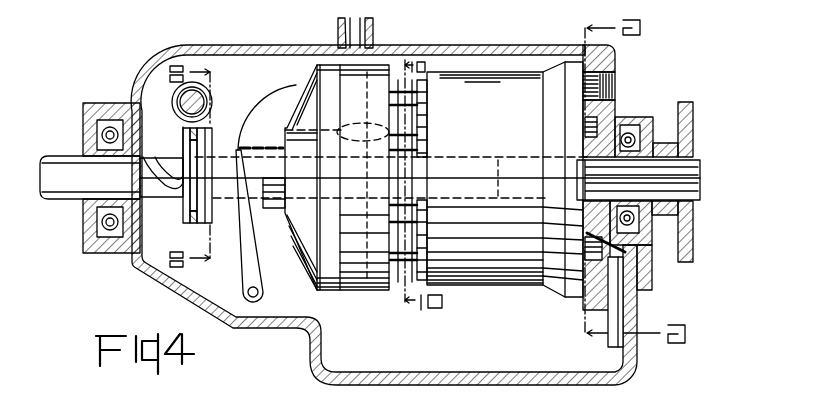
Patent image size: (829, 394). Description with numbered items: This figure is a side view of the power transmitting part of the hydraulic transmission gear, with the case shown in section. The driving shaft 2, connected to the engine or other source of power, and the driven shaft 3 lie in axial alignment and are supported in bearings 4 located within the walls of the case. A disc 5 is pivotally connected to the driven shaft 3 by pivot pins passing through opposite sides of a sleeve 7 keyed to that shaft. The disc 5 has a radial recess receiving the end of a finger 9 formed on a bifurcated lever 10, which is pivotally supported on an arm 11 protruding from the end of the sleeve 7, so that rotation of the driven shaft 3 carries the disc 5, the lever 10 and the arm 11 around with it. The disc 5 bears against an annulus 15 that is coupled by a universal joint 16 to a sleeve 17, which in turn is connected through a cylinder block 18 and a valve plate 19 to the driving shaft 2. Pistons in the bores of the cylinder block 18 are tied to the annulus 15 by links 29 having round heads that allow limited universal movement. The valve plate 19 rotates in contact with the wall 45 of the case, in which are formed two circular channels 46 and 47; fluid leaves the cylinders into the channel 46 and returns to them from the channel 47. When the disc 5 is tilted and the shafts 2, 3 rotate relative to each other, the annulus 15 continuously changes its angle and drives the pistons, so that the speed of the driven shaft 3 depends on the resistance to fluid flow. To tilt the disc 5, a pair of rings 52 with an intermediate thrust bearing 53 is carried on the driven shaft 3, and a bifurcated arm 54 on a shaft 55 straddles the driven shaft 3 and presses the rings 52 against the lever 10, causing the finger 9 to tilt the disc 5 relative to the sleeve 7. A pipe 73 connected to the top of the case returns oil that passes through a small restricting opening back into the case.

The driving shaft 2 is at (680, 170).
The driven shaft 3 is at (48, 171).
The bearings 4 is at (100, 134).
The disc 5 is at (304, 256).
The sleeve 7 is at (264, 147).
The finger 9 is at (258, 103).
The bifurcated lever 10 is at (231, 247).
The arm 11 is at (258, 248).
The annulus 15 is at (358, 282).
The universal joint 16 is at (363, 124).
The sleeve 17 is at (409, 170).
The cylinder block 18 is at (483, 280).
The valve plate 19 is at (557, 292).
The links 29 is at (419, 131).
The wall 45 is at (610, 57).
The circular channel 46 is at (612, 82).
The circular channel 47 is at (598, 126).
The rings 52 is at (208, 129).
The thrust bearing 53 is at (194, 193).
The bifurcated arm 54 is at (158, 150).
The shaft 55 is at (181, 99).
The pipe 73 is at (368, 32).